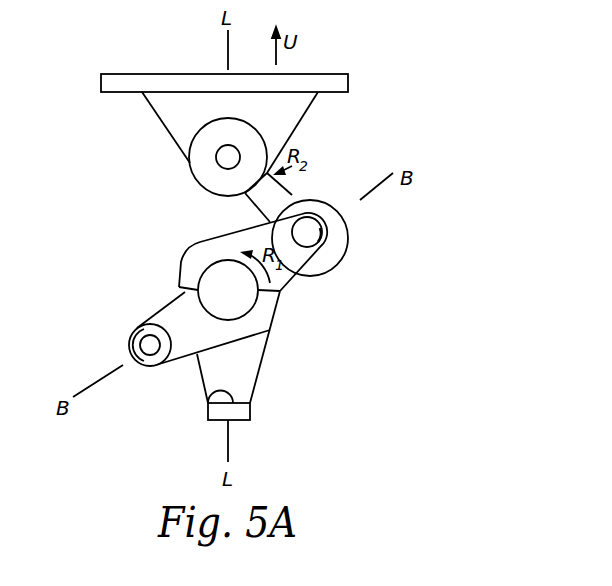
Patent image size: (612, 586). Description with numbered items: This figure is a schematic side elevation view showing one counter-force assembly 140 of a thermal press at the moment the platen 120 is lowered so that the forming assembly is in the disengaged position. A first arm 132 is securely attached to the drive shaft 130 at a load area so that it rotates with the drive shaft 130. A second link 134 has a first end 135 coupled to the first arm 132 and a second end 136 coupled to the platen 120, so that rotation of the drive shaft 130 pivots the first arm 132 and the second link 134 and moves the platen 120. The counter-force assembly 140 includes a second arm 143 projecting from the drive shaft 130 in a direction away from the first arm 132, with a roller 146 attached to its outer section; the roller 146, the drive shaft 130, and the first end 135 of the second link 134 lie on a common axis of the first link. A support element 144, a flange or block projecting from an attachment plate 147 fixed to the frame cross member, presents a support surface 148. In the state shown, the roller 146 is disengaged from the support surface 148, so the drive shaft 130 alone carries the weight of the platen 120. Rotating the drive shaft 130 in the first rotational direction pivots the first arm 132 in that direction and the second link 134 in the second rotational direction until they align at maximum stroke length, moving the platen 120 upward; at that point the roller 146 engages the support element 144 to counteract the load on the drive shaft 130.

The first platen 120 is at (348, 82).
The drive shaft 130 is at (213, 275).
The first arm 132 is at (231, 240).
The second link 134 is at (305, 200).
The first end 135 is at (323, 238).
The second end 136 is at (218, 160).
The counter-force assembly 140 is at (231, 359).
The second arm 143 is at (173, 310).
The support element 144 is at (250, 412).
The roller 146 is at (128, 343).
The attachment plate 147 is at (253, 362).
The support surface 148 is at (207, 394).